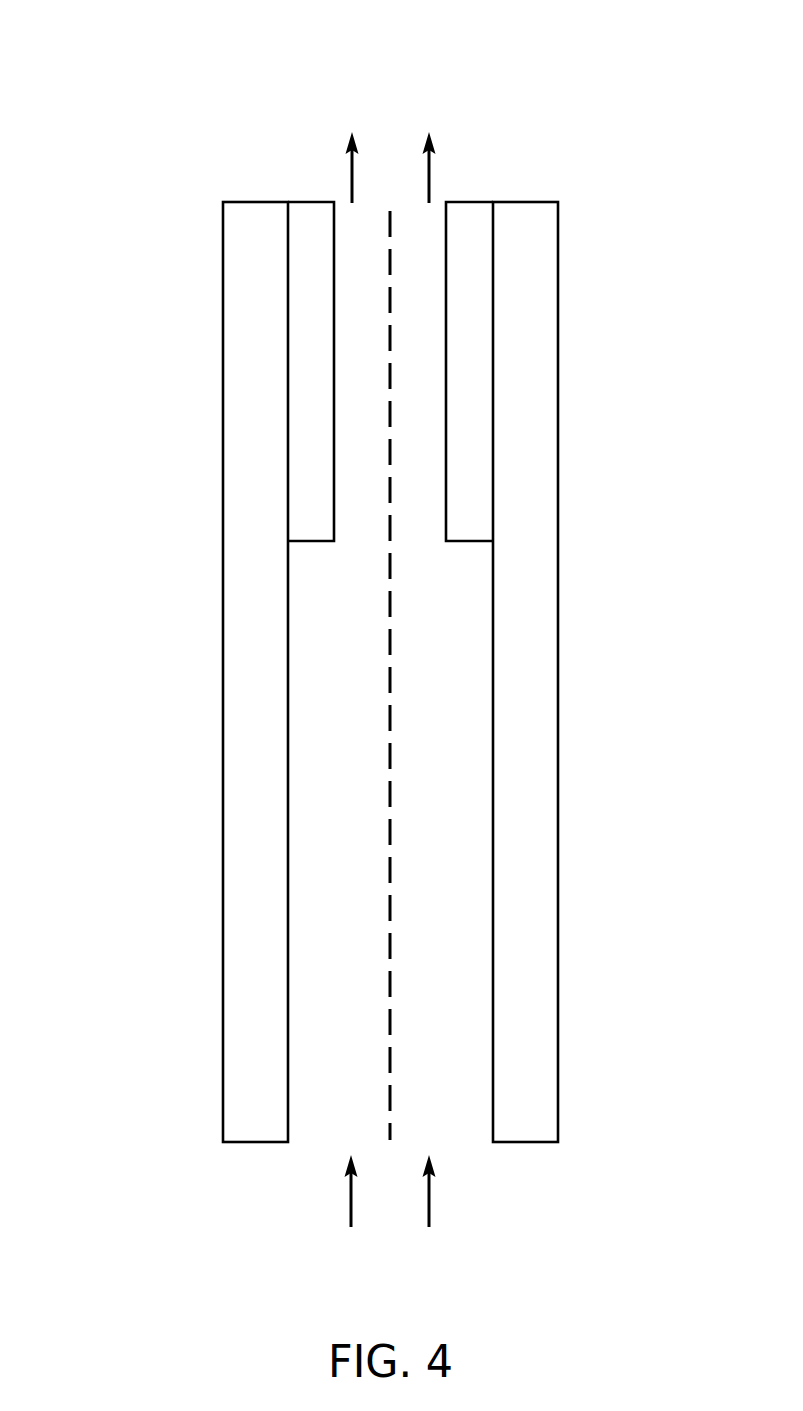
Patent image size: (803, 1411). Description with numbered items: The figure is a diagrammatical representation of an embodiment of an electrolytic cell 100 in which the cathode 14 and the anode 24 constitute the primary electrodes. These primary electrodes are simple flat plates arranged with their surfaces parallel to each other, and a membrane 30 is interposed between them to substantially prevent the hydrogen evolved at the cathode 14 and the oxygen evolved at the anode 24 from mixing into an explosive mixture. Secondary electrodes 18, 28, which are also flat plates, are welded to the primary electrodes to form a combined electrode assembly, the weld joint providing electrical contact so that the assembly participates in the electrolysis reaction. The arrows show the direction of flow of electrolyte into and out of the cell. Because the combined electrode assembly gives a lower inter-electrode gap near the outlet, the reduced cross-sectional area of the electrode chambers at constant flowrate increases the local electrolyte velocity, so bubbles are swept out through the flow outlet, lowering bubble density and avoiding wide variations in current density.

The electrolytic cell 100 is at (180, 62).
The cathode 14 is at (223, 672).
The secondary electrode 18 is at (311, 212).
The anode 24 is at (558, 672).
The secondary electrode 28 is at (469, 213).
The membrane 30 is at (390, 256).